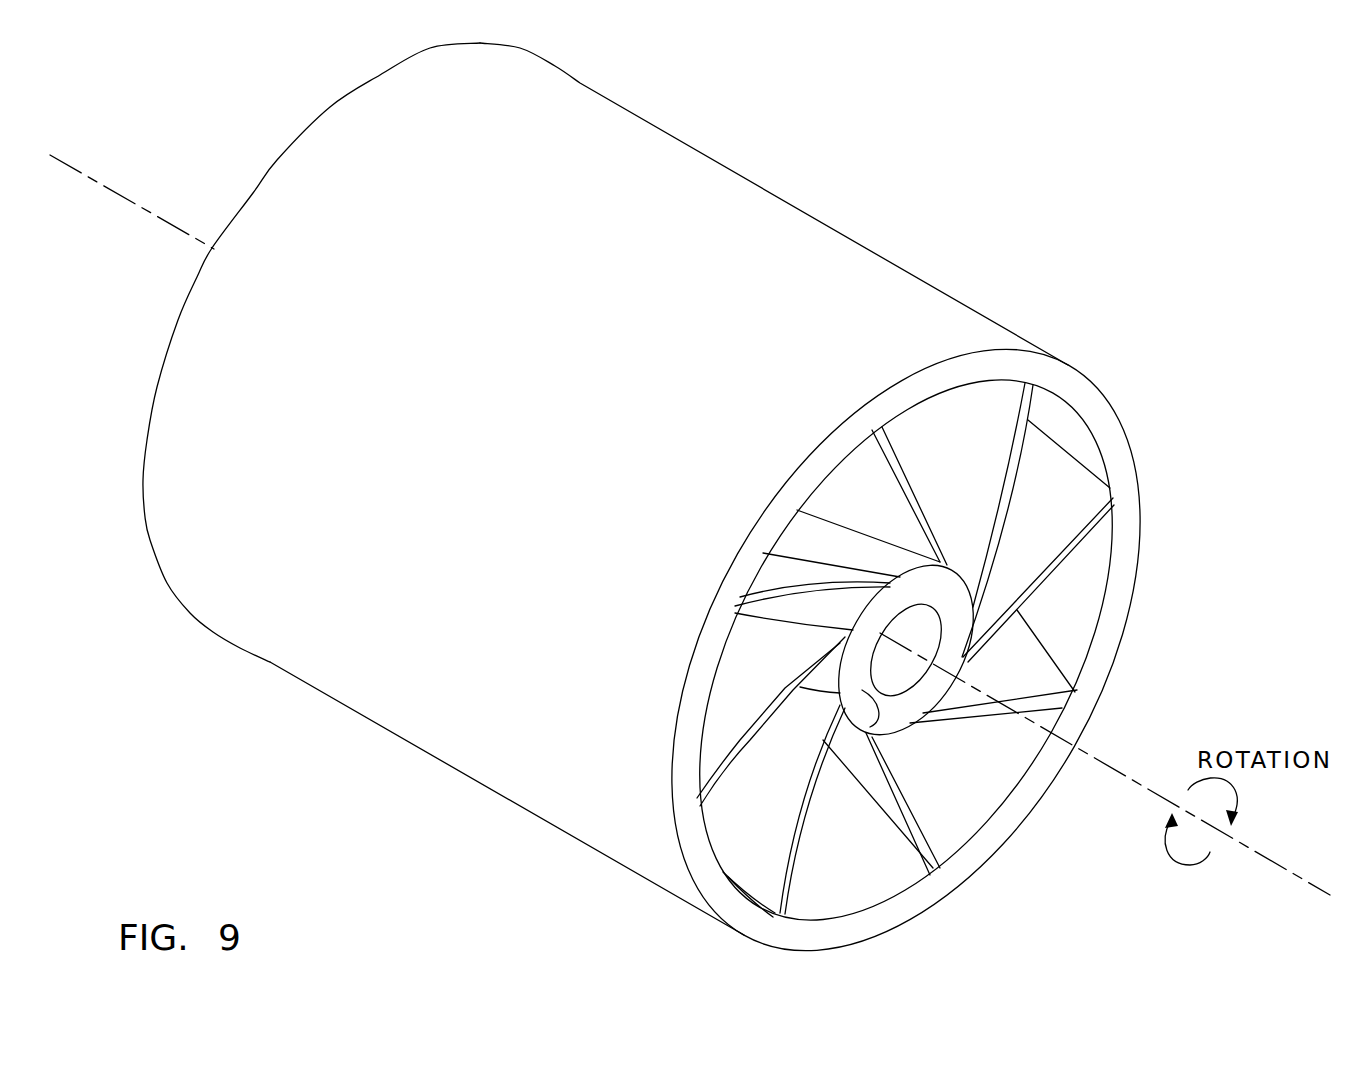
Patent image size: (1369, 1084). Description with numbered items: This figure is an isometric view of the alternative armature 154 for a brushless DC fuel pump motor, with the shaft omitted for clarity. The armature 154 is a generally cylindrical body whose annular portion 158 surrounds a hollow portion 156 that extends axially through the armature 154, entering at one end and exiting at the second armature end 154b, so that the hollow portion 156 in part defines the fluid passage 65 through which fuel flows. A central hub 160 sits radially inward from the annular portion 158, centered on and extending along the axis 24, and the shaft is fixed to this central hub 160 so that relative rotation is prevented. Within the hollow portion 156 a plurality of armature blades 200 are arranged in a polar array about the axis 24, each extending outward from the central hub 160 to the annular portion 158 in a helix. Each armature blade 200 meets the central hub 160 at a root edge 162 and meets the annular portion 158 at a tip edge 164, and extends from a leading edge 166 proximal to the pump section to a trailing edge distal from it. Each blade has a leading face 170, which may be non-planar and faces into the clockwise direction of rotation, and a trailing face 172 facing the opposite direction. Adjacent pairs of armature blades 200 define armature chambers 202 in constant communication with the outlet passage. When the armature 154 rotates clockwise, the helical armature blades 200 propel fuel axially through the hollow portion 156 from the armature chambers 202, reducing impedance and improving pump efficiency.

The armature 154 is at (1121, 154).
The second armature end 154b is at (145, 447).
The annular portion 158 is at (1113, 457).
The hollow portion 156 is at (1006, 779).
The central hub 160 is at (880, 733).
The root edge 162 is at (870, 537).
The tip edge 164 is at (1075, 457).
The leading edge 166 is at (1047, 580).
The leading face 170 is at (765, 828).
The trailing face 172 is at (1013, 680).
The armature blade 200 is at (1082, 553).
The armature chamber 202 is at (812, 748).
The fluid passage 65 is at (881, 804).
The axis 24 is at (1262, 857).